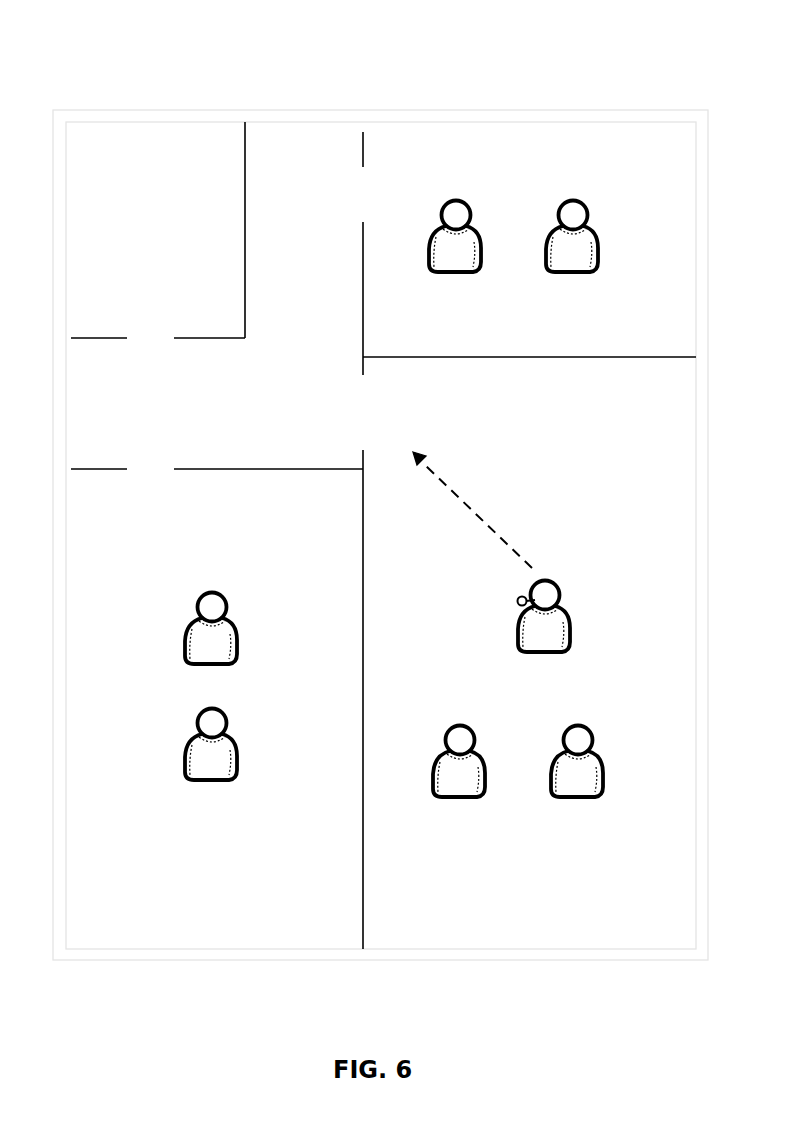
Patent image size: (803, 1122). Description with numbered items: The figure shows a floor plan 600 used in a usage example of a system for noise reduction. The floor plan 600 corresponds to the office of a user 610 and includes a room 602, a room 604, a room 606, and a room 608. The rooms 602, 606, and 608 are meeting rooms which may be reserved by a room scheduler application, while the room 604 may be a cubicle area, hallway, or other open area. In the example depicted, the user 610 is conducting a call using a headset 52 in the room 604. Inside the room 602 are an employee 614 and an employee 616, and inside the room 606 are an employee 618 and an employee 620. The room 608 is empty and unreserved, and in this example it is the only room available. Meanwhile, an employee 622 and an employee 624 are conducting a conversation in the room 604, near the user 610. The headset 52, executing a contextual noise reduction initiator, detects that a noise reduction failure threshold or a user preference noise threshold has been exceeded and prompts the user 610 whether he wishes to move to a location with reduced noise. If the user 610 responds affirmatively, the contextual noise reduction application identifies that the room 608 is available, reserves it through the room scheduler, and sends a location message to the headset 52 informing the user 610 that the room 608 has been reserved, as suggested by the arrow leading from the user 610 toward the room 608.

The floor plan 600 is at (388, 40).
The room 602 is at (529, 253).
The room 604 is at (526, 699).
The room 606 is at (217, 484).
The room 608 is at (158, 230).
The user 610 is at (553, 584).
The headset 52 is at (519, 597).
The employee 614 is at (584, 203).
The employee 616 is at (467, 203).
The employee 618 is at (224, 593).
The employee 620 is at (224, 709).
The employee 622 is at (471, 727).
The employee 624 is at (589, 727).